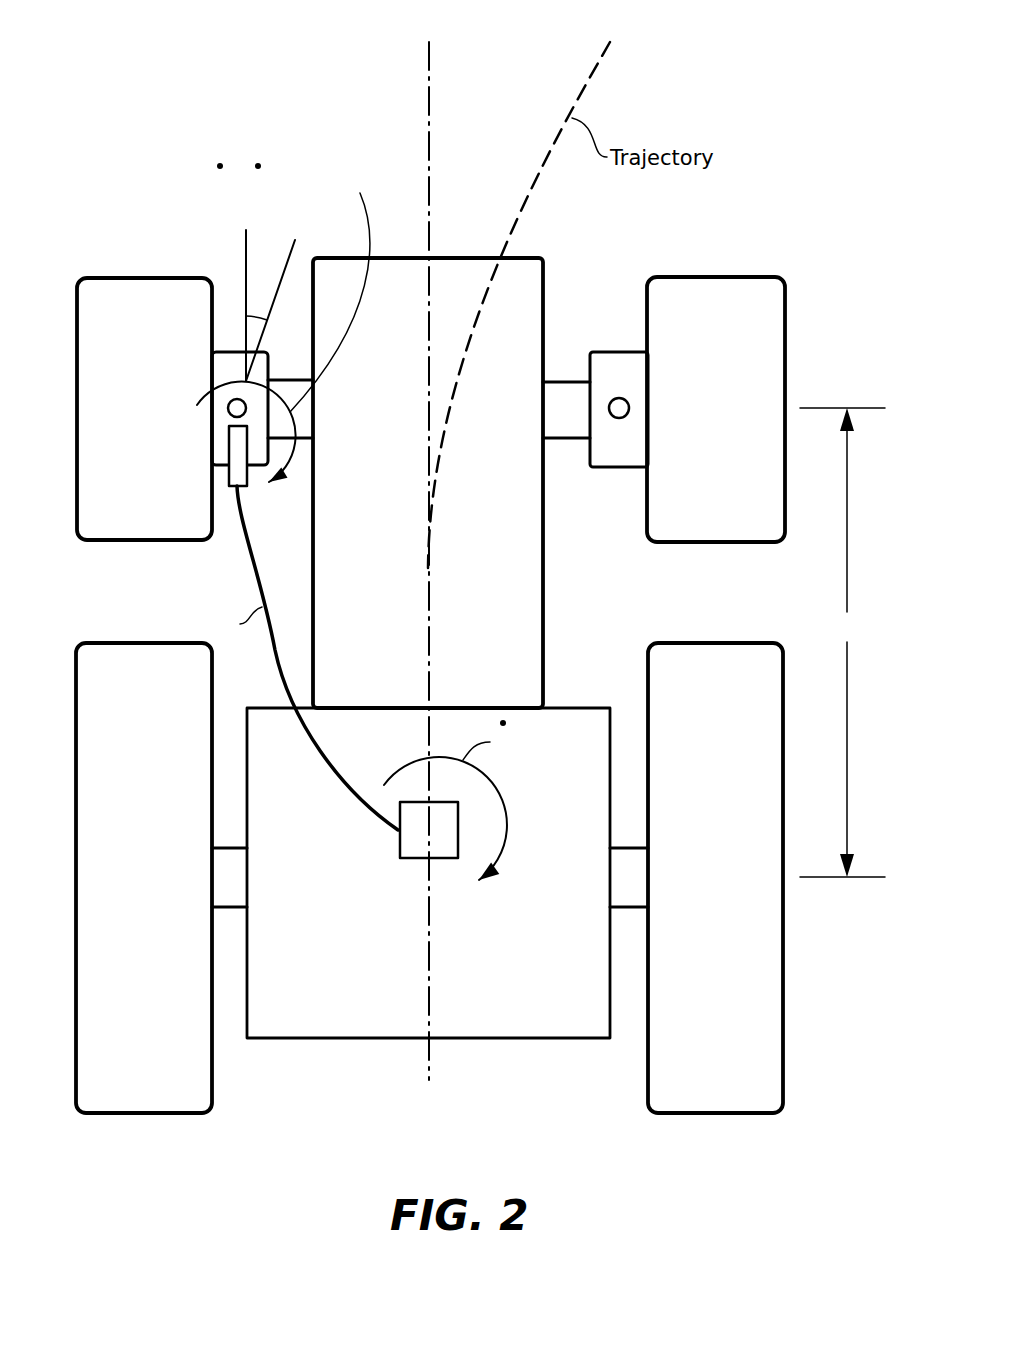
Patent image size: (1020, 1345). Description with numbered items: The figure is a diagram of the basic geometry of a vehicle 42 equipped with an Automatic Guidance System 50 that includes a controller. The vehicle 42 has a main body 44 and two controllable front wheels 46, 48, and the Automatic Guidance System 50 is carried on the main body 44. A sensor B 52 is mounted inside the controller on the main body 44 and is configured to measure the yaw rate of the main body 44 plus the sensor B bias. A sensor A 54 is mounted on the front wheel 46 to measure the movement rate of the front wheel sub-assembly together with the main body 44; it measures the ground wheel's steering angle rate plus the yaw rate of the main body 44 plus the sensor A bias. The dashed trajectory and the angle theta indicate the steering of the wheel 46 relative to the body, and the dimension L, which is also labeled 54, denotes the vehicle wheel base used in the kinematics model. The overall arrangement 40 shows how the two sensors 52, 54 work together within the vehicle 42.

The vehicle / mobile robot 40 is at (491, 680).
The vehicle 42 is at (123, 630).
The main body 44 is at (530, 572).
The controllable front wheel 46 is at (111, 277).
The controllable front wheel 48 is at (752, 277).
The Automatic Guidance System 50 is at (565, 708).
The sensor B 52 is at (417, 843).
The sensor A 54 is at (224, 474).